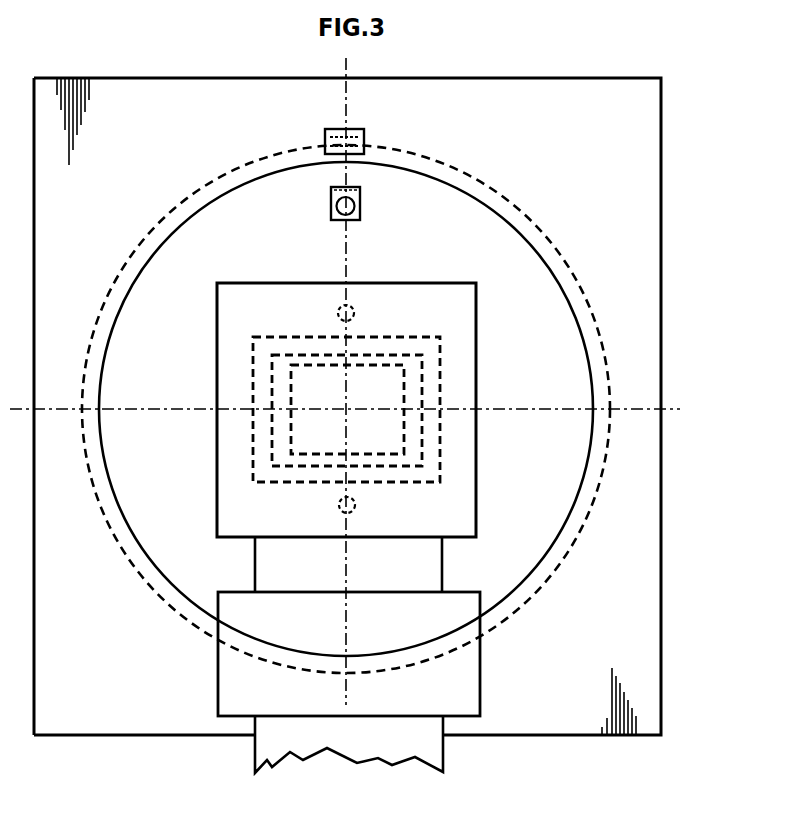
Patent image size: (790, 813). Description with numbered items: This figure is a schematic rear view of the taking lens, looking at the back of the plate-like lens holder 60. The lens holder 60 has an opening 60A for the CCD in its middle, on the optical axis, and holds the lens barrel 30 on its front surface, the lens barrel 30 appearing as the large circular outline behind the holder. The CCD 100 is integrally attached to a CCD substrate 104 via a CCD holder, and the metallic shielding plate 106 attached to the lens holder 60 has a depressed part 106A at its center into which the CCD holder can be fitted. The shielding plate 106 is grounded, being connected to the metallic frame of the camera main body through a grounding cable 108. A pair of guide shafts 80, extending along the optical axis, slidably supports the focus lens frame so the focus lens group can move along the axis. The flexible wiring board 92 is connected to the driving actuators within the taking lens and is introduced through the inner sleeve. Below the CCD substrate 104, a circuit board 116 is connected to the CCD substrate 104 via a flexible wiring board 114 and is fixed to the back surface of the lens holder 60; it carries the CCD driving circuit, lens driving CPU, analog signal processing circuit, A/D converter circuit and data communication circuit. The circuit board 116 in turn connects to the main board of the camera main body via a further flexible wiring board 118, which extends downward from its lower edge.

The lens holder 60 is at (612, 93).
The lens barrel 30 is at (522, 222).
The shielding plate 106 is at (563, 507).
The flexible wiring board 92 is at (364, 137).
The grounding cable 108 is at (361, 195).
The CCD substrate 104 is at (467, 330).
The guide shaft 80 is at (355, 313).
The opening 60A is at (433, 478).
The depressed part 106A is at (413, 460).
The CCD 100 is at (390, 385).
The flexible wiring board 114 is at (425, 563).
The circuit board 116 is at (460, 673).
The flexible wiring board 118 is at (427, 751).